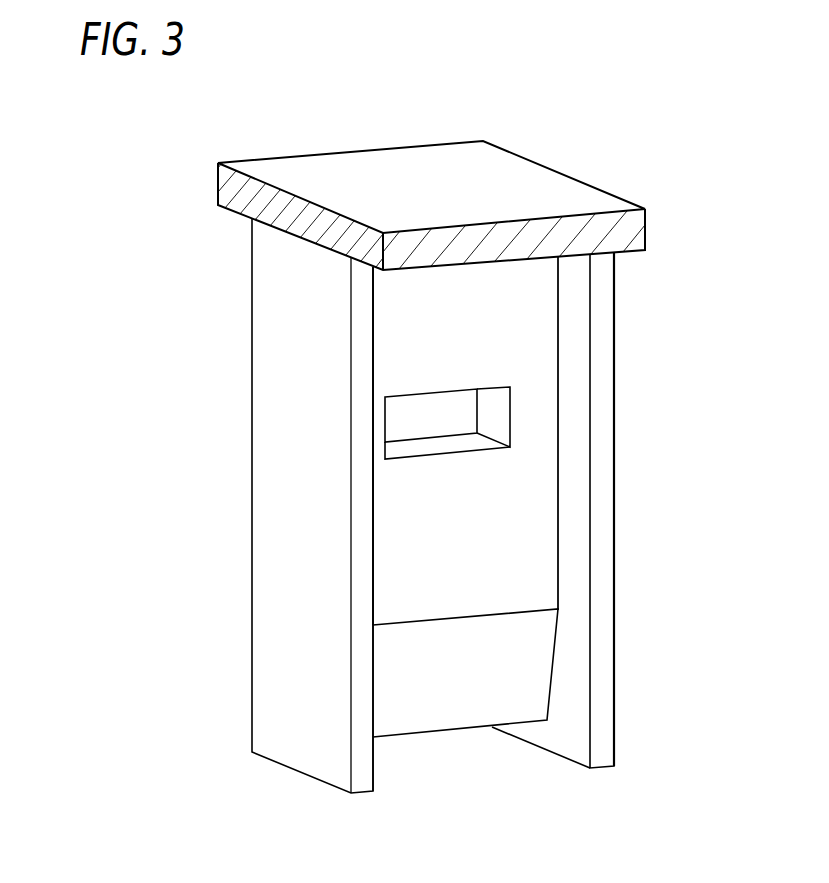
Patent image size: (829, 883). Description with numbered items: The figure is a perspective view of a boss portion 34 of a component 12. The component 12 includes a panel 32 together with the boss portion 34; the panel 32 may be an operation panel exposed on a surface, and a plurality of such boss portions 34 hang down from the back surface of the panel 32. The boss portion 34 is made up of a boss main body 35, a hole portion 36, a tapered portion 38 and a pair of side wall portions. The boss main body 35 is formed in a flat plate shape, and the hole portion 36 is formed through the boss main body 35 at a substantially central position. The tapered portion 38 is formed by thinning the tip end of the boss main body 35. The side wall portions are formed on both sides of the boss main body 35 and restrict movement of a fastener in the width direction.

The component 12 is at (488, 835).
The panel 32 is at (540, 173).
The boss portion 34 is at (514, 540).
The boss main body 35 is at (541, 342).
The hole portion 36 is at (497, 413).
The tapered portion 38 is at (520, 675).